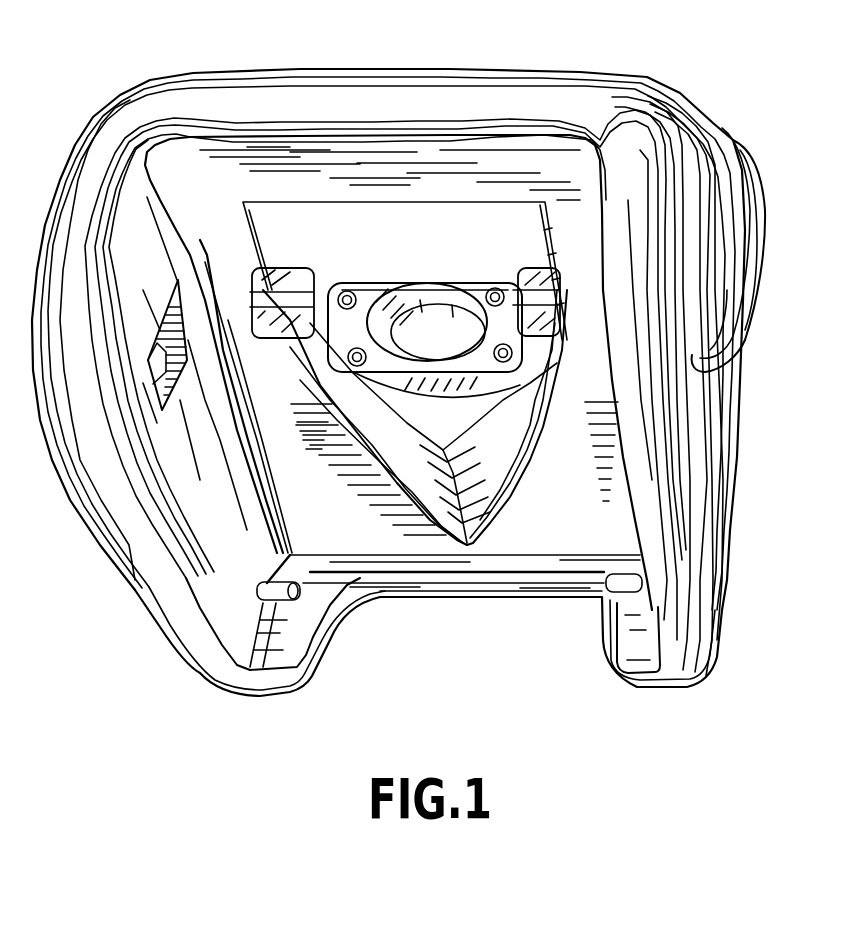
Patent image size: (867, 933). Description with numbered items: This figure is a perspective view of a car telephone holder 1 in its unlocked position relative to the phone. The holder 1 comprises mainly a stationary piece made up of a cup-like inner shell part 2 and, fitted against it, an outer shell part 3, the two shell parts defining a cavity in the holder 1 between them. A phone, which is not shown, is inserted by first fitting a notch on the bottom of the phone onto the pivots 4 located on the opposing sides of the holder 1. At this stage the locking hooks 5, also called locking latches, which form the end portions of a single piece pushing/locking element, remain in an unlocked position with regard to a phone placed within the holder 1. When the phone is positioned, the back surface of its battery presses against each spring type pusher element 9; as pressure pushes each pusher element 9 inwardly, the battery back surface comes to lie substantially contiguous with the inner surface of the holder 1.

The holder 1 is at (722, 697).
The inner shell part 2 is at (185, 548).
The outer shell part 3 is at (725, 452).
The pivots 4 is at (272, 583).
The locking hooks 5 is at (178, 280).
The spring type pusher element 9 is at (290, 265).